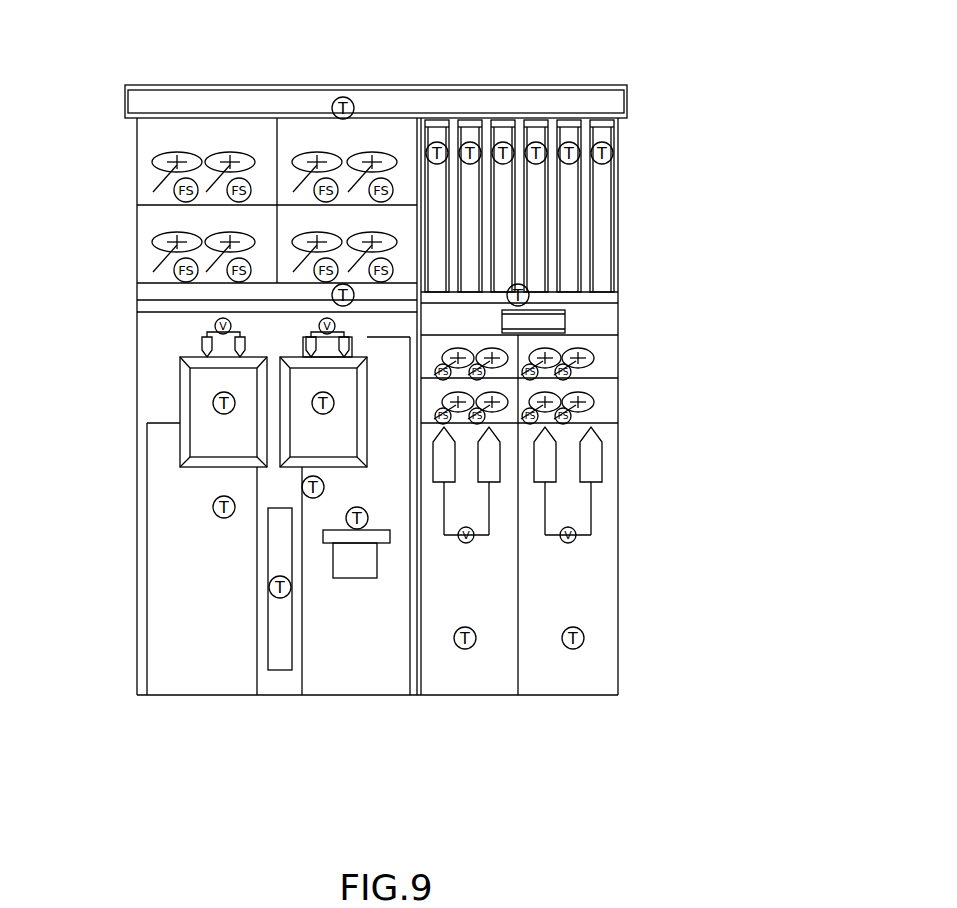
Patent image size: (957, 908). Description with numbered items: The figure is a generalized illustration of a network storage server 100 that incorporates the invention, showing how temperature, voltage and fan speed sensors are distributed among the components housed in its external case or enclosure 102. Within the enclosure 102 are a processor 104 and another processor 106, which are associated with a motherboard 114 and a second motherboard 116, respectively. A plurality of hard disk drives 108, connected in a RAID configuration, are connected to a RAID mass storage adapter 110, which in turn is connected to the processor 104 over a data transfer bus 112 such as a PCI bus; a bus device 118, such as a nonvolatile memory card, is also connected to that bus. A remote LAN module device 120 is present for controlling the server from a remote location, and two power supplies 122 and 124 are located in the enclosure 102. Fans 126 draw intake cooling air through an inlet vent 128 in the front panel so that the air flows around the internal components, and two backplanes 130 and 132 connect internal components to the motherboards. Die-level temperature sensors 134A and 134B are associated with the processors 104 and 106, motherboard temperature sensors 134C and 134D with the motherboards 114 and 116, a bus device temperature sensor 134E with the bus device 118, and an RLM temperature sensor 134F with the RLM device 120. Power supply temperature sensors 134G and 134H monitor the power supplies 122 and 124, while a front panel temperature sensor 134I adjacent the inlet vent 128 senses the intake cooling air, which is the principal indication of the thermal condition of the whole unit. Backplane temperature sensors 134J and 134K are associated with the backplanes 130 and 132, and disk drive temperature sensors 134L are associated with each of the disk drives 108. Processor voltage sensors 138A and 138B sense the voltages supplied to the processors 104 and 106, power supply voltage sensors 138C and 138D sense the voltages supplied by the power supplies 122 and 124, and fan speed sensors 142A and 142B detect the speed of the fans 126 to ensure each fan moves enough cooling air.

The network storage server 100 is at (680, 62).
The enclosure 102 is at (137, 378).
The processor 104 is at (302, 378).
The processor 106 is at (207, 425).
The hard disk drives 108 is at (437, 272).
The RAID mass storage adapter 110 is at (565, 322).
The data transfer bus 112 is at (388, 545).
The motherboard 114 is at (385, 362).
The second motherboard 116 is at (165, 460).
The bus device 118 is at (340, 570).
The remote LAN module (RLM) device 120 is at (276, 665).
The power supply 122 is at (488, 680).
The power supply 124 is at (555, 683).
The fan 126 is at (155, 240).
The inlet vent 128 is at (410, 103).
The backplane 130 is at (137, 312).
The backplane 132 is at (618, 298).
The processor temperature sensor 134A is at (323, 415).
The processor temperature sensor 134B is at (212, 403).
The motherboard temperature sensor 134C is at (301, 487).
The motherboard temperature sensor 134D is at (212, 507).
The bus device temperature sensor 134E is at (362, 508).
The RLM temperature sensor 134F is at (270, 585).
The power supply temperature sensor 134G is at (465, 650).
The power supply temperature sensor 134H is at (585, 638).
The front panel temperature sensor 134I is at (343, 97).
The backplane temperature sensor 134J is at (332, 295).
The backplane temperature sensor 134K is at (522, 288).
The disk drive temperature sensors 134L is at (503, 142).
The processor voltage sensor 138A is at (352, 348).
The processor voltage sensor 138B is at (205, 352).
The power supply voltage sensor 138C is at (468, 545).
The power supply voltage sensor 138D is at (570, 545).
The fan speed sensor 142A is at (400, 180).
The fan speed sensor 142B is at (575, 418).